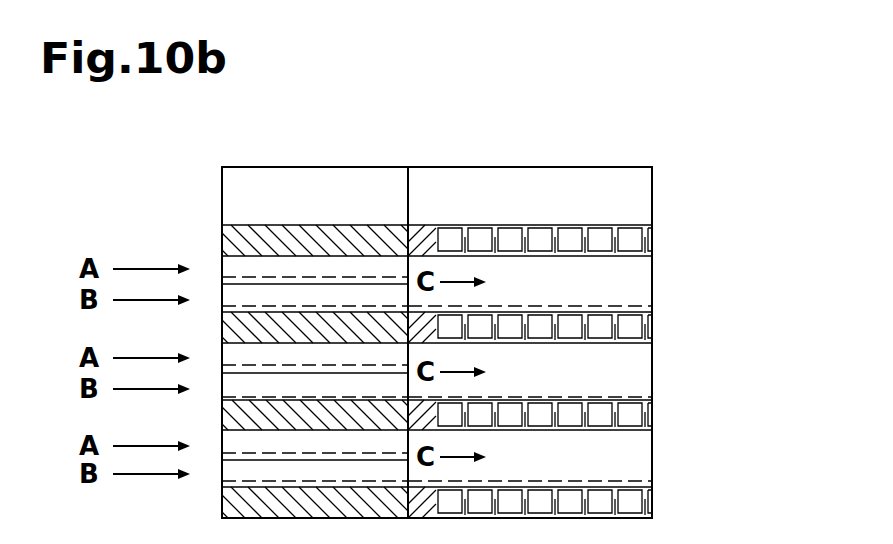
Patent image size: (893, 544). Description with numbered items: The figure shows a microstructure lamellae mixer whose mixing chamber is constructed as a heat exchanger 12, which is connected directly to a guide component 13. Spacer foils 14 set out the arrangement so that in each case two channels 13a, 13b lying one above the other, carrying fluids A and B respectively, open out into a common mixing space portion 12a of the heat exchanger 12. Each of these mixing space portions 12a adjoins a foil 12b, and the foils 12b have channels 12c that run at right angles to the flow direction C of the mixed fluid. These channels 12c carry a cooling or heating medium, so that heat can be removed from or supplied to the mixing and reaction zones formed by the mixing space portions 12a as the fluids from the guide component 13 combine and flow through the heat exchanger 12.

The heat exchanger 12 is at (535, 183).
The mixing space portion 12a is at (630, 277).
The foil 12b is at (653, 246).
The channel 12c is at (635, 503).
The guide component 13 is at (212, 258).
The channel 13a is at (295, 292).
The channel 13b is at (363, 265).
The spacer foil 14 is at (256, 237).